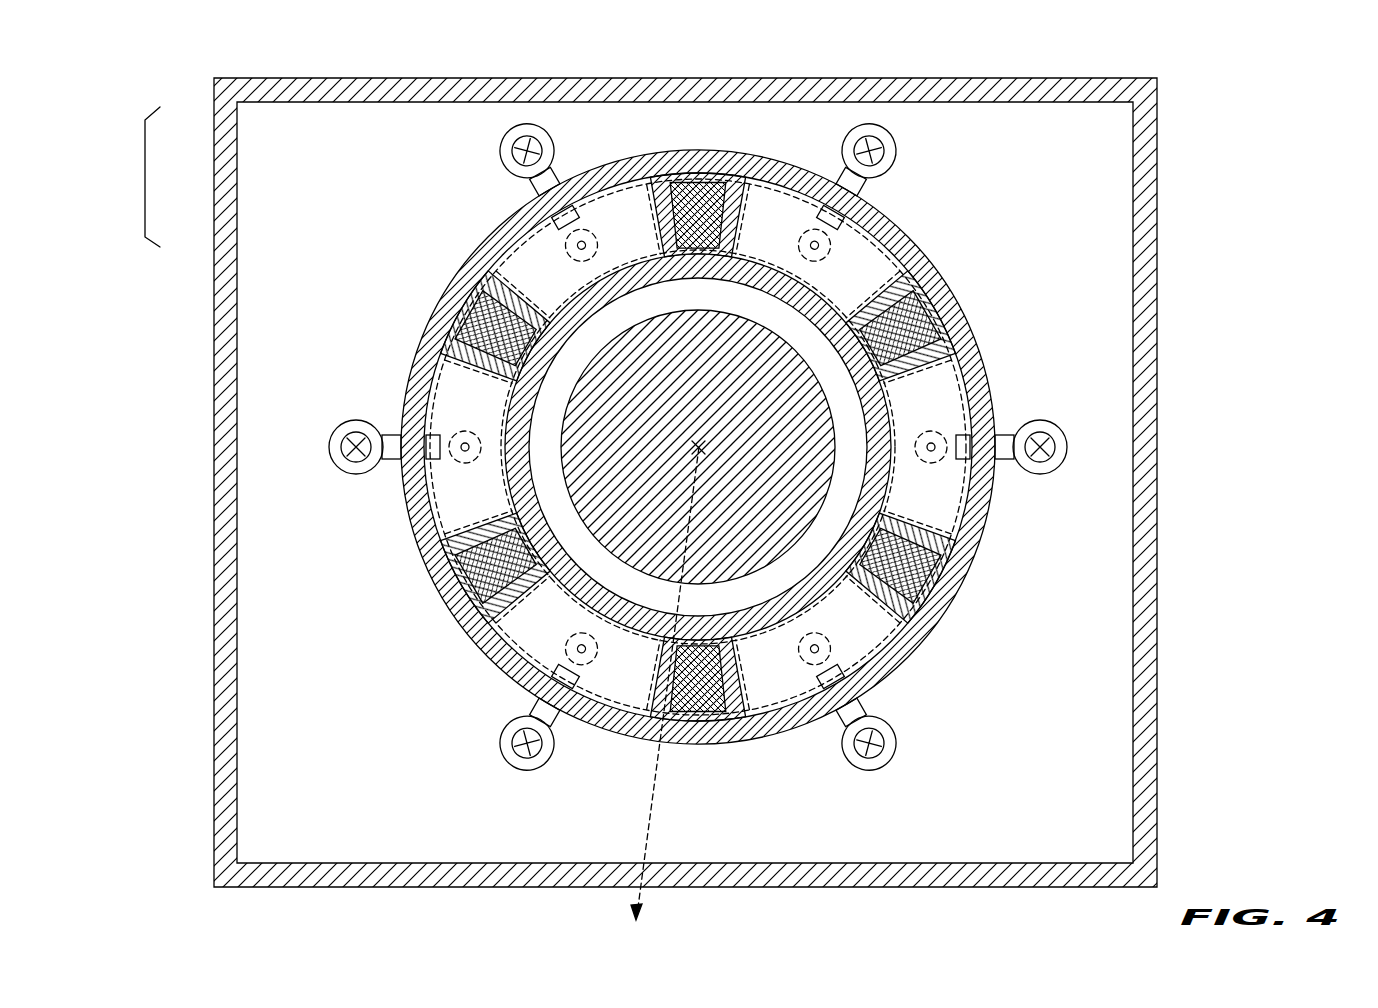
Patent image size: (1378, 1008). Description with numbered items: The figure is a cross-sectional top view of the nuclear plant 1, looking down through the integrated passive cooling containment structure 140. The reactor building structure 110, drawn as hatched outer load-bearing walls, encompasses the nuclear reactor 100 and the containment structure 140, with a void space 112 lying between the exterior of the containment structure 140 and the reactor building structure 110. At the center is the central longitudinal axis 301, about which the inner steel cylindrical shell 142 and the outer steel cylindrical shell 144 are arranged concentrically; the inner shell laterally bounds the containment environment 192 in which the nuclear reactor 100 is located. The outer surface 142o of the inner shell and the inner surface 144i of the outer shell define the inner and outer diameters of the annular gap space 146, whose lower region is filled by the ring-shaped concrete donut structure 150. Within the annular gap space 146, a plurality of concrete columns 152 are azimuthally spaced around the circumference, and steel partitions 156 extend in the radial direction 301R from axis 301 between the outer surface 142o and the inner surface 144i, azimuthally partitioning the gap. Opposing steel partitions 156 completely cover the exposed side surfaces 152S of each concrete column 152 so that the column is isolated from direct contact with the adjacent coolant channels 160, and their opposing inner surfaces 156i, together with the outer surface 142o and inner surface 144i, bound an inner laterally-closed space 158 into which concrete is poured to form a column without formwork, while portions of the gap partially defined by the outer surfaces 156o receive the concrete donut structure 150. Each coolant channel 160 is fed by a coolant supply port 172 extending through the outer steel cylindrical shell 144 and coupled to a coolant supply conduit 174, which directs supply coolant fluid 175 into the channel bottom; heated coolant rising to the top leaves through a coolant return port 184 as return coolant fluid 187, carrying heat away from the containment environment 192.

The nuclear plant 1 is at (1222, 56).
The nuclear reactor 100 is at (708, 394).
The reactor building structure 110 is at (1157, 312).
The void space 112 is at (1076, 169).
The containment structure 140 is at (123, 177).
The inner steel cylindrical shell 142 is at (510, 410).
The outer surface of the inner steel cylindrical shell 142o is at (520, 255).
The outer steel cylindrical shell 144 is at (963, 330).
The inner surface of the outer steel cylindrical shell 144i is at (525, 232).
The annular gap space 146 is at (983, 513).
The concrete donut structure 150 is at (145, 180).
The concrete column 152 is at (700, 178).
The side surface of the concrete column 152S is at (745, 180).
The steel partition 156 is at (665, 183).
The inner surface of the steel partition 156i is at (525, 292).
The outer surface of the steel partition 156o is at (487, 353).
The inner laterally-closed space 158 is at (680, 165).
The coolant channel 160 is at (603, 183).
The coolant supply port 172 is at (530, 188).
The coolant supply conduit 174 is at (512, 162).
The supply coolant fluid 175 is at (517, 745).
The coolant return port 184 is at (518, 212).
The return coolant fluid 187 is at (590, 656).
The containment environment 192 is at (668, 609).
The central longitudinal axis 301 is at (706, 450).
The radial direction 301R is at (652, 836).